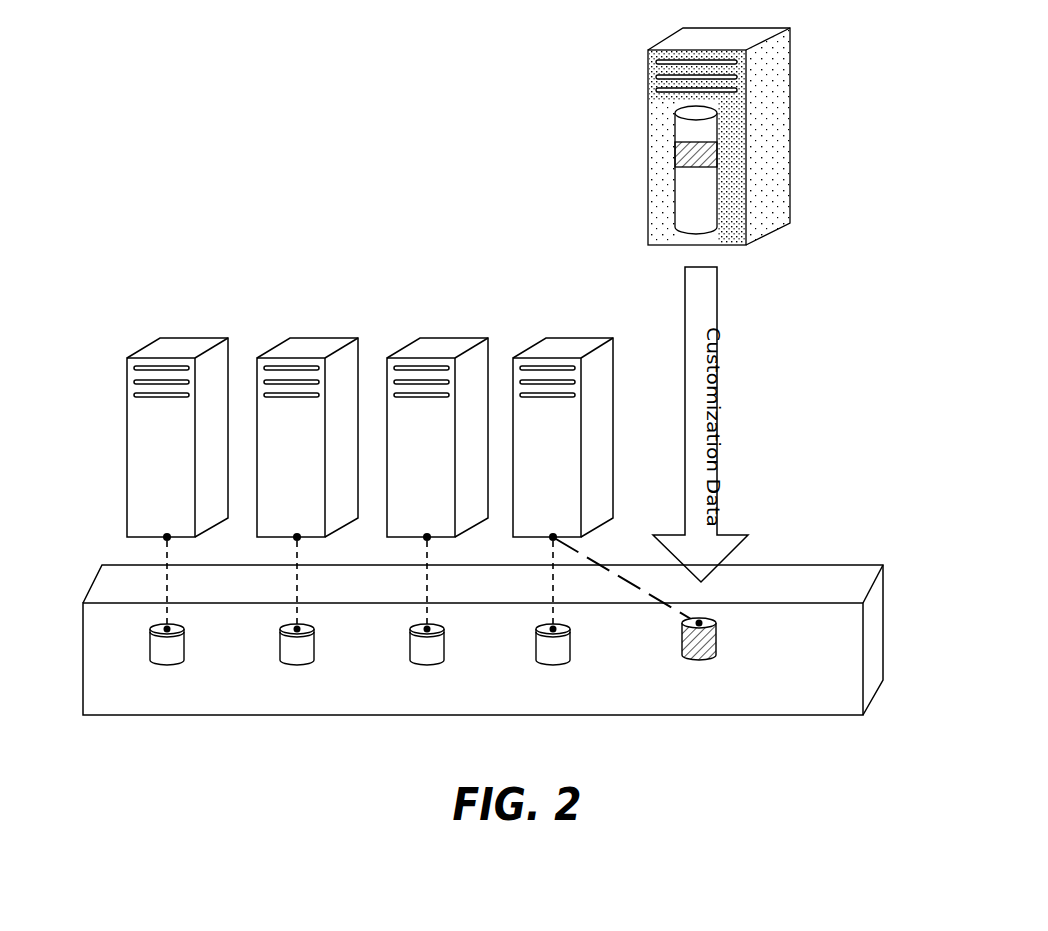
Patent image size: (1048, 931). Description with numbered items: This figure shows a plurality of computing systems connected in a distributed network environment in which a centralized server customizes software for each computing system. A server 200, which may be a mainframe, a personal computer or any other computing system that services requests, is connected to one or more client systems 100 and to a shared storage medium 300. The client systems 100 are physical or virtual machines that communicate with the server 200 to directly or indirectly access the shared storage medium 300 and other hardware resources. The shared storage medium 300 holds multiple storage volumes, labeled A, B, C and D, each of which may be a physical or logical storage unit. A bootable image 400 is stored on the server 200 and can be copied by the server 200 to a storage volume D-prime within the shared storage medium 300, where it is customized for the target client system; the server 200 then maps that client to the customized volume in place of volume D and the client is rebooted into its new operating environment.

The client systems 100 is at (370, 415).
The server 200 is at (787, 41).
The shared storage medium 300 is at (483, 640).
The bootable image 400 is at (718, 153).